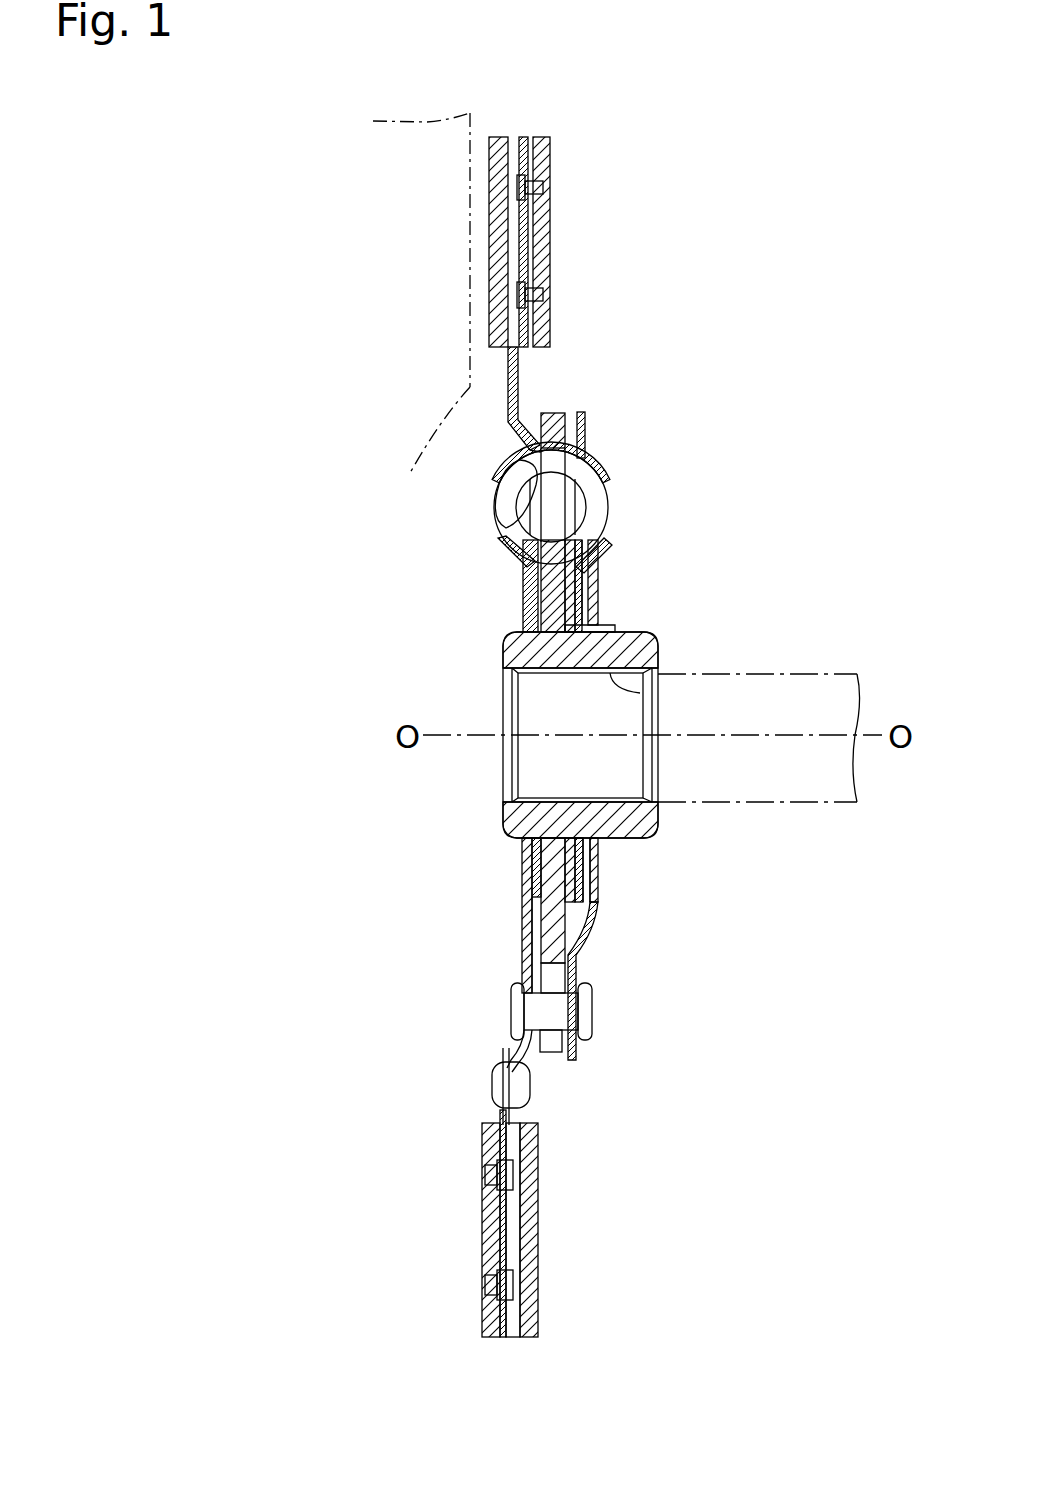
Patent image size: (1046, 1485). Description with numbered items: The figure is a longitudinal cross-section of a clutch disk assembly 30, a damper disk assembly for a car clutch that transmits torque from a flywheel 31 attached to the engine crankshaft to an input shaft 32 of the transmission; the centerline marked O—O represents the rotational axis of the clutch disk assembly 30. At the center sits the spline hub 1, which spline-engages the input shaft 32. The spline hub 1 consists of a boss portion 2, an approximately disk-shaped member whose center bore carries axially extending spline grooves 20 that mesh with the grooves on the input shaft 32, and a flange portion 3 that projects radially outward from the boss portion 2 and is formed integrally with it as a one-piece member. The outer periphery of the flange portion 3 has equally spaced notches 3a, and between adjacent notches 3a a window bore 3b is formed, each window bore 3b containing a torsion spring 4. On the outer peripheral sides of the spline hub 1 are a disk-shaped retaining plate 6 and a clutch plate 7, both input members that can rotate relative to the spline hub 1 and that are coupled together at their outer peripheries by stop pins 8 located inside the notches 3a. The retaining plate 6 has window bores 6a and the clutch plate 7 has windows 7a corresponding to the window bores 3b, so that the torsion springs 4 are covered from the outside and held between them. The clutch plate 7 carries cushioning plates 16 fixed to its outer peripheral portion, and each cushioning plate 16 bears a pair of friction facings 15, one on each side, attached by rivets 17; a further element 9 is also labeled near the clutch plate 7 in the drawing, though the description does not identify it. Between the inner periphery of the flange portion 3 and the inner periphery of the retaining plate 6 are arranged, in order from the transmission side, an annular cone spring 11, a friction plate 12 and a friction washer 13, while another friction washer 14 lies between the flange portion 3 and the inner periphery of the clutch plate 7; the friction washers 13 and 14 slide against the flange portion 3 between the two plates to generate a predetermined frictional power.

The spline hub 1 is at (503, 657).
The boss portion 2 is at (650, 636).
The flange portion 3 is at (565, 418).
The notches 3a is at (550, 1045).
The window bore 3b is at (585, 440).
The torsion spring 4 is at (597, 525).
The retaining plate 6 is at (598, 597).
The window bores 6a is at (607, 500).
The clutch plate 7 is at (523, 592).
The windows 7a is at (500, 493).
The stop pins 8 is at (570, 1030).
The clip 9 is at (492, 1080).
The annular cone spring 11 is at (600, 848).
The friction plate 12 is at (600, 873).
The friction washer 13 is at (600, 904).
The friction washer 14 is at (522, 866).
The friction facings 15 is at (500, 139).
The cushioning plates 16 is at (550, 160).
The rivets 17 is at (550, 188).
The spline grooves 20 is at (640, 693).
The clutch disk assembly 30 is at (737, 437).
The flywheel 31 is at (470, 113).
The input shaft 32 is at (773, 674).